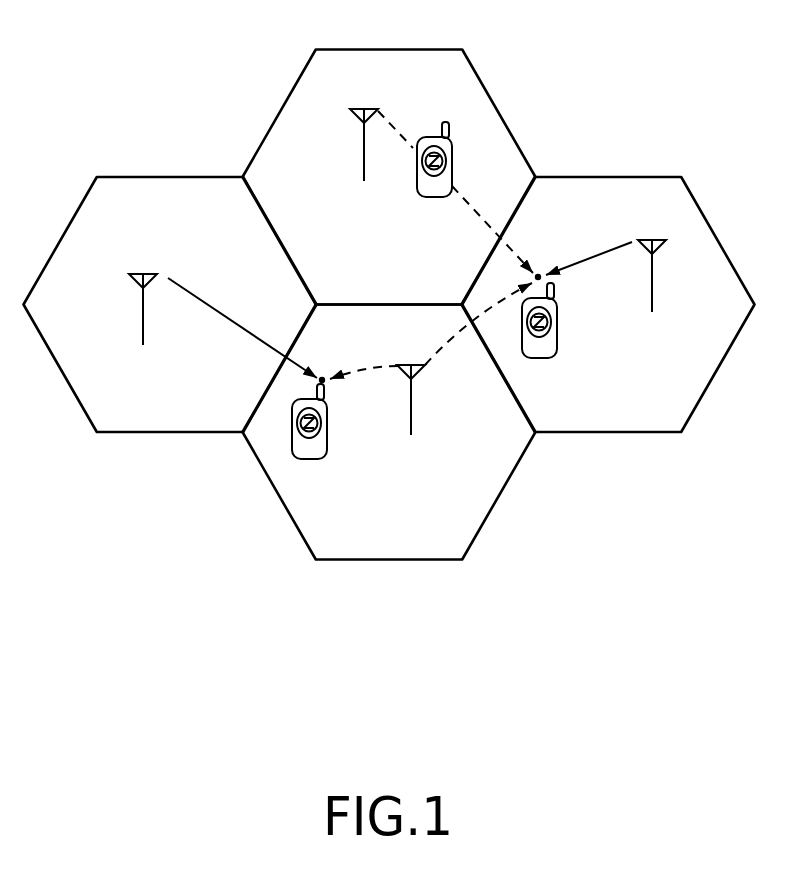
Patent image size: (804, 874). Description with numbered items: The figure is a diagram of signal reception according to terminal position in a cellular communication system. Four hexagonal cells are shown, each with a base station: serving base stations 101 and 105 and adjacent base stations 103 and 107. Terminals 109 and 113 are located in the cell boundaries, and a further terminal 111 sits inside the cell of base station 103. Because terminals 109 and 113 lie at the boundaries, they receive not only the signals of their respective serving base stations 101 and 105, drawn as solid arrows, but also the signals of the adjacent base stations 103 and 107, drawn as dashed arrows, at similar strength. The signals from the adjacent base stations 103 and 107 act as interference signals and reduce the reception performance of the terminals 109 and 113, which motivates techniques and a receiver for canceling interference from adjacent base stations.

The serving base station 101 is at (143, 274).
The adjacent base station 103 is at (364, 108).
The serving base station 105 is at (653, 240).
The adjacent base station 107 is at (413, 405).
The terminal 109 is at (329, 423).
The mobile station 111 is at (454, 160).
The terminal 113 is at (559, 320).